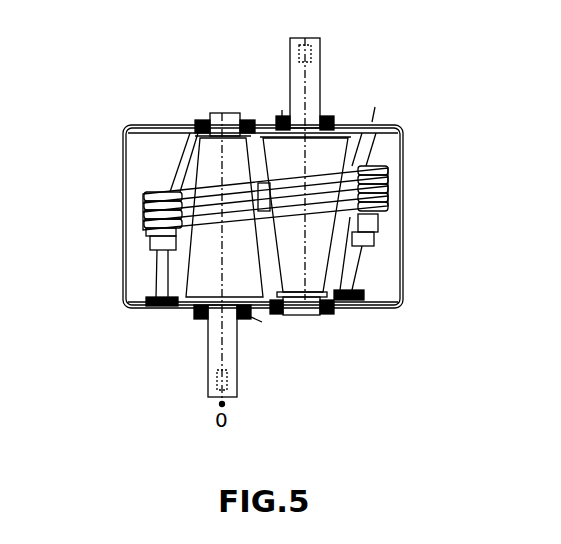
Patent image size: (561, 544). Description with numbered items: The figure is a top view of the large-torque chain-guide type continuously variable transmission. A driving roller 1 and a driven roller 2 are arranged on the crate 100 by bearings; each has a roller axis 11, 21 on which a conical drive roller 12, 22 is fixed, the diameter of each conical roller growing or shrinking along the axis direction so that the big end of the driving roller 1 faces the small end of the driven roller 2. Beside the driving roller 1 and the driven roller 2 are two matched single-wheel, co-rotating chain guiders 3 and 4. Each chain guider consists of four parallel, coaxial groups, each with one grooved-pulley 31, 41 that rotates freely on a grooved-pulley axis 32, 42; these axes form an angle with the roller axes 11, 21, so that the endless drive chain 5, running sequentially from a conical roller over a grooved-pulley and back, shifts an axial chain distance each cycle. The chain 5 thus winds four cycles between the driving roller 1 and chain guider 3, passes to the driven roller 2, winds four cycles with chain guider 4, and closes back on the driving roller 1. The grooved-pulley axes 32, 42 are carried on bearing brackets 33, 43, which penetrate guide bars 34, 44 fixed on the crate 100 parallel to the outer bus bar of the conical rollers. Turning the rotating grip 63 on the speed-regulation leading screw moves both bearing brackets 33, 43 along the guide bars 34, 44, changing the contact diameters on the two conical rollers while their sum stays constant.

The crate 100 is at (123, 147).
The driving roller 1 is at (202, 261).
The roller axis 11 is at (225, 357).
The drive roller 12 is at (224, 205).
The driven roller 2 is at (325, 166).
The roller axis 21 is at (310, 80).
The drive roller 22 is at (305, 226).
The chain guider 3 is at (150, 195).
The grooved-pulley 31 is at (148, 230).
The grooved-pulley axis 32 is at (150, 243).
The bearing bracket 33 is at (156, 260).
The guide bar 34 is at (147, 303).
The chain guider 4 is at (380, 202).
The grooved-pulley 41 is at (378, 222).
The grooved-pulley axis 42 is at (372, 232).
The bearing bracket 43 is at (362, 243).
The guide bar 44 is at (352, 298).
The endless drive chain 5 is at (385, 175).
The rotating grip 63 is at (258, 322).